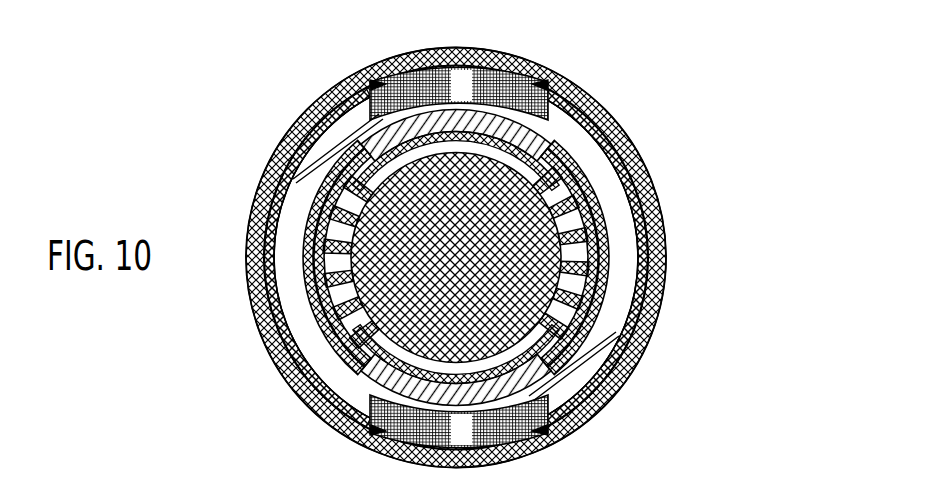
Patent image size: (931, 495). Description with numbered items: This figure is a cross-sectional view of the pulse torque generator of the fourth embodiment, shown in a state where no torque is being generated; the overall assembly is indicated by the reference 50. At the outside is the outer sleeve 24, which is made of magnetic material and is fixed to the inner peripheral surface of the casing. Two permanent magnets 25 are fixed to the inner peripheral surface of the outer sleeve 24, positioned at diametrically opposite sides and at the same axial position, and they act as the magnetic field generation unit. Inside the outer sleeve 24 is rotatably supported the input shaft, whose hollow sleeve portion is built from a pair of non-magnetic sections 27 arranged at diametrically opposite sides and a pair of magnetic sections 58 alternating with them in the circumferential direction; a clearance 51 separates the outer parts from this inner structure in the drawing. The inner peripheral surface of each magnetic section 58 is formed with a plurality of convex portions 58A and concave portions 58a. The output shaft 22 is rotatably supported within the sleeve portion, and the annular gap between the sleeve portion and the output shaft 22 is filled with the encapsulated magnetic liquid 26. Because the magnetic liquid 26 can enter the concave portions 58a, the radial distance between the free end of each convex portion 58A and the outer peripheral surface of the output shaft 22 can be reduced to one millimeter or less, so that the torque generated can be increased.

The motor 50 is at (756, 121).
The outer sleeve 24 is at (286, 141).
The output shaft 22 is at (623, 378).
The permanent magnet 25 is at (538, 80).
The non-magnetic section 27 is at (551, 152).
The magnetic liquid 26 is at (345, 346).
The magnetic section 58 is at (588, 187).
The convex portion 58A is at (600, 317).
The concave portion 58a is at (608, 277).
The gap 51 is at (621, 238).